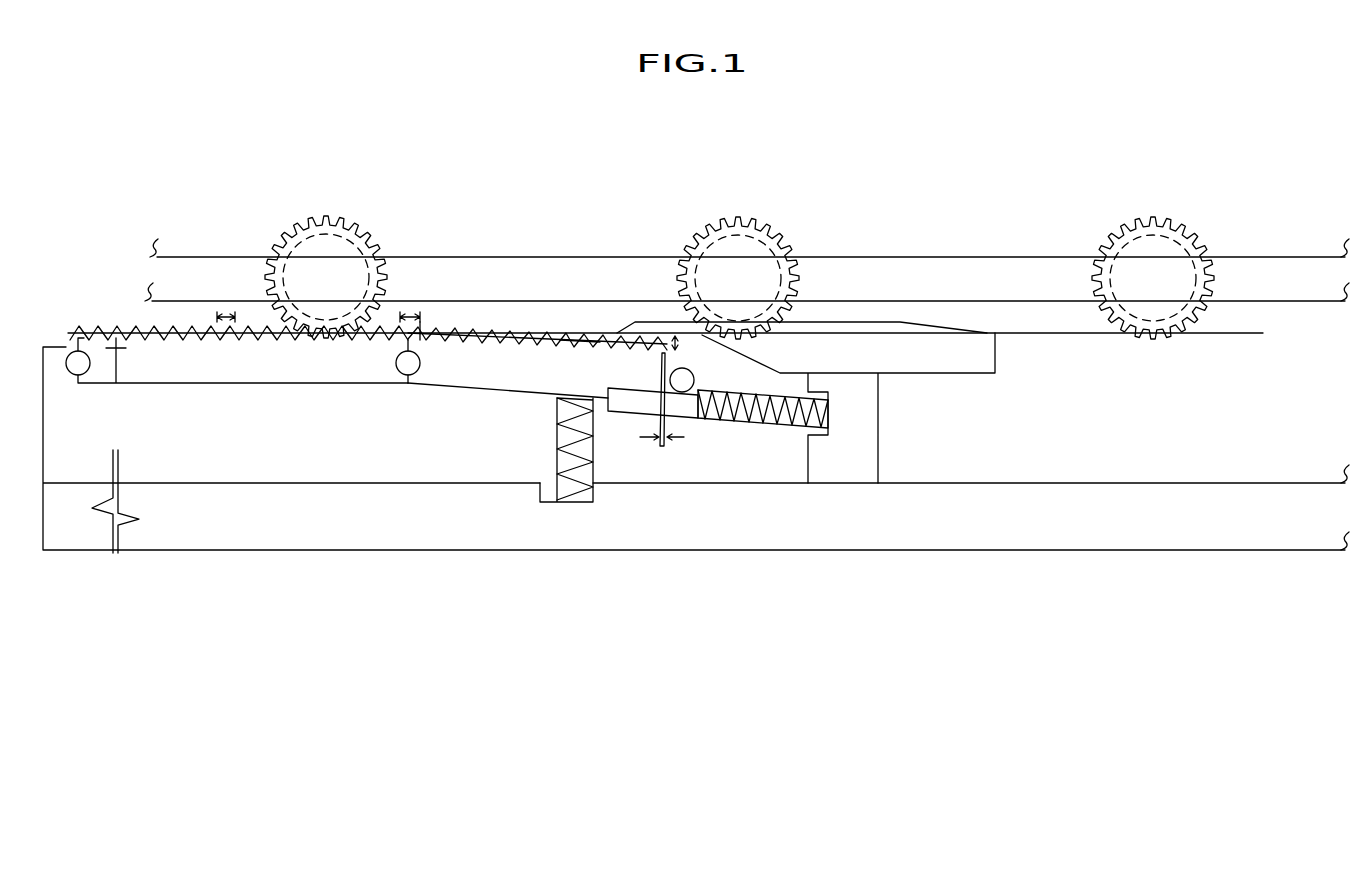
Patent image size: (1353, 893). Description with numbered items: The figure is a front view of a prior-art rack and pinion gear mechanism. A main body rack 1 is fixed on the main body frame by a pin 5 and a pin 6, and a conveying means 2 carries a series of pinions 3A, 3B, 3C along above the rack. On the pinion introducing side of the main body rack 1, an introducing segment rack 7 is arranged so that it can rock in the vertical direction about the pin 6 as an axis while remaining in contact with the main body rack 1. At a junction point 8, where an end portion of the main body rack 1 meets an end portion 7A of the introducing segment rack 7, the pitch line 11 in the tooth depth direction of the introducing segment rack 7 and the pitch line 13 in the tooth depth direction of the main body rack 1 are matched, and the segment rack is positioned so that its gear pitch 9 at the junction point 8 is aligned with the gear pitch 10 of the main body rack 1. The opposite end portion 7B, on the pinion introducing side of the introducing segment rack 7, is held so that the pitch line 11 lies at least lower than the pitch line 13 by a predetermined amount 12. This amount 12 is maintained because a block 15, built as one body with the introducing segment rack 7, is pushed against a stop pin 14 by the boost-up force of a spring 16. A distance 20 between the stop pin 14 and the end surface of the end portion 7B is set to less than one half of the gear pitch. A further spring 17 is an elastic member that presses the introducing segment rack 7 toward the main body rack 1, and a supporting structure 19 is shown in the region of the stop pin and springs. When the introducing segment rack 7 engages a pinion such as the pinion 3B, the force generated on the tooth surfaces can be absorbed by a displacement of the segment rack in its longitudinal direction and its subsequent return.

The main body rack 1 is at (268, 385).
The conveying means 2 is at (497, 256).
The pinion 3A is at (336, 248).
The pinion 3B is at (749, 249).
The pinion 3C is at (1163, 249).
The pin 5 is at (76, 376).
The pin 6 is at (405, 378).
The introducing segment rack 7 is at (468, 384).
The end portion of the introducing segment rack 7A is at (412, 346).
The end portion of the pinion introducing side 7B is at (643, 439).
The junction point 8 is at (420, 322).
The gear pitch of the introducing segment rack 9 is at (412, 312).
The gear pitch of the main body rack 10 is at (226, 340).
The pitch line of the introducing segment rack 11 is at (578, 352).
The predetermined amount 12 is at (677, 350).
The pitch line of the main body rack 13 is at (572, 335).
The stop pin 14 is at (694, 379).
The block 15 is at (685, 410).
The spring 16 is at (557, 460).
The spring 17 is at (759, 400).
The cam plate 19 is at (892, 322).
The distance 20 is at (662, 446).